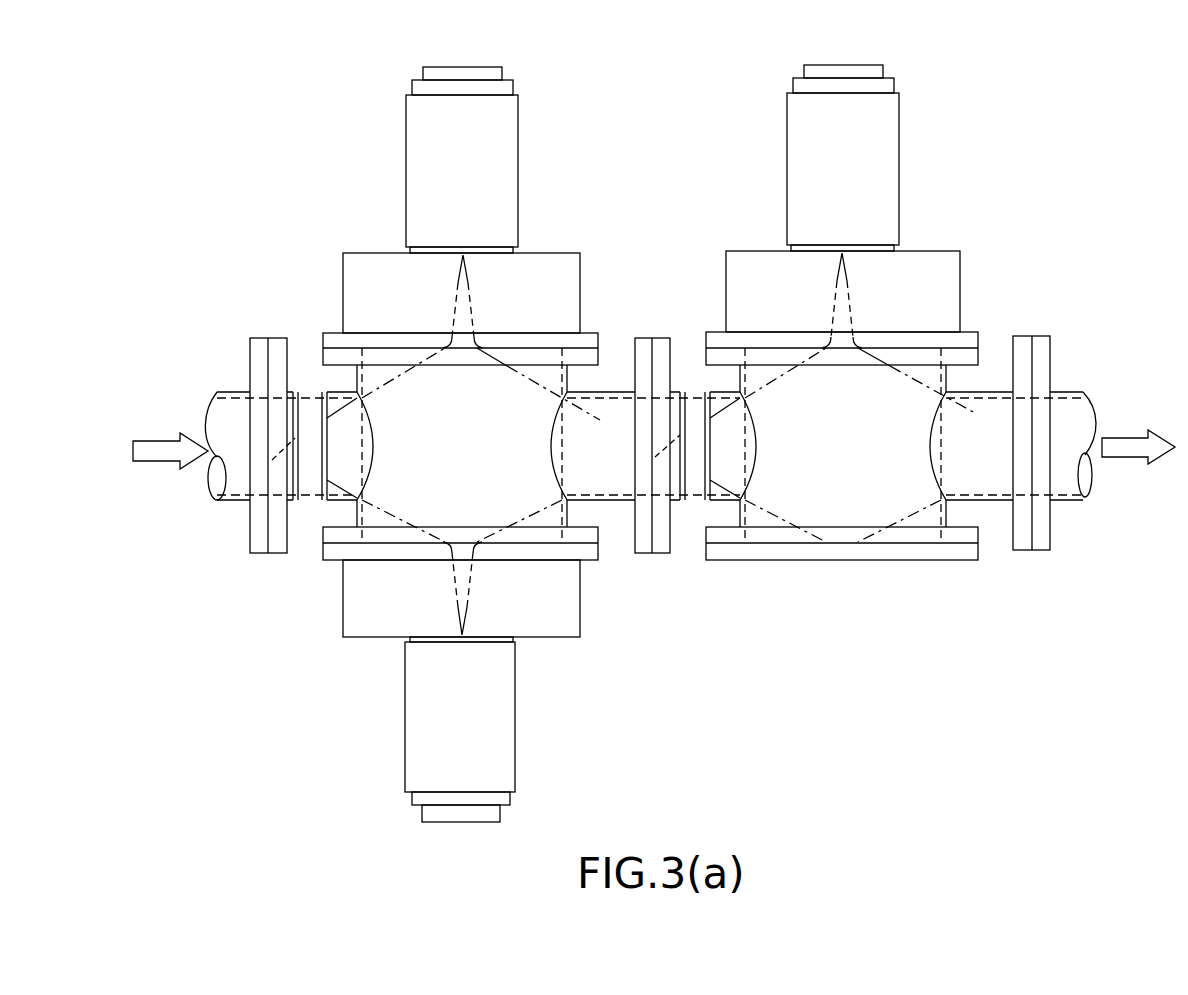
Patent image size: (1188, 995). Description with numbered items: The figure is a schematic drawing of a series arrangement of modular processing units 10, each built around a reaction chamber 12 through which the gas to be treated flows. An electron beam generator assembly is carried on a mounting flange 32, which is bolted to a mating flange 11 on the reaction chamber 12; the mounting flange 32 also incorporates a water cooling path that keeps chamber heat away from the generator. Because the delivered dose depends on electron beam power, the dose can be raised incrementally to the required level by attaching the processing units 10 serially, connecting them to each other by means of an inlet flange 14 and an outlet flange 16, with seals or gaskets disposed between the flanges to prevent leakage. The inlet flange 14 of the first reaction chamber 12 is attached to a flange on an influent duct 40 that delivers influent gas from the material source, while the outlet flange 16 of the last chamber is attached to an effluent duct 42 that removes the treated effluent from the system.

The processing unit 10 is at (670, 443).
The mating flange 11 is at (600, 347).
The reaction chamber 12 is at (433, 510).
The inlet flange 14 is at (273, 555).
The outlet flange 16 is at (640, 553).
The mounting flange 32 is at (322, 333).
The influent duct 40 is at (235, 502).
The effluent duct 42 is at (1083, 391).